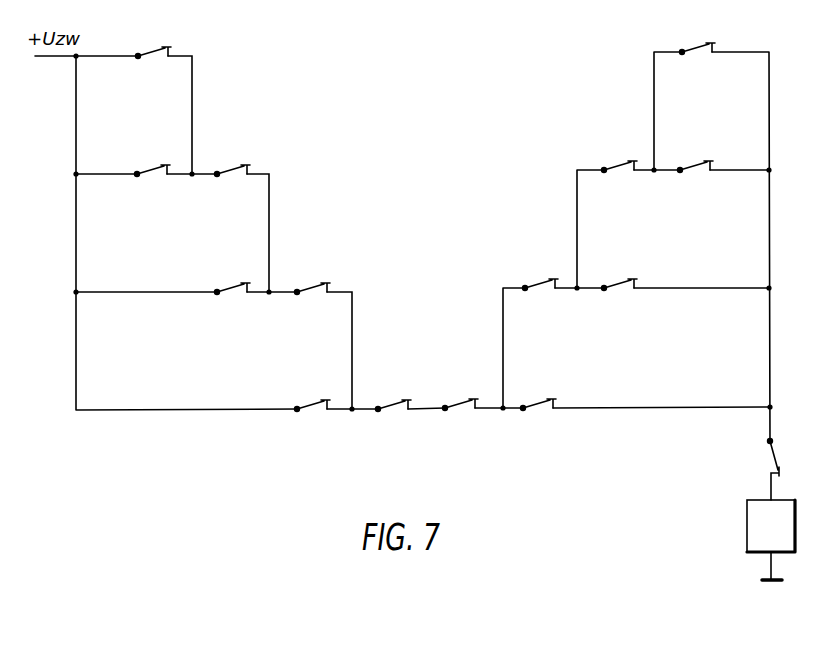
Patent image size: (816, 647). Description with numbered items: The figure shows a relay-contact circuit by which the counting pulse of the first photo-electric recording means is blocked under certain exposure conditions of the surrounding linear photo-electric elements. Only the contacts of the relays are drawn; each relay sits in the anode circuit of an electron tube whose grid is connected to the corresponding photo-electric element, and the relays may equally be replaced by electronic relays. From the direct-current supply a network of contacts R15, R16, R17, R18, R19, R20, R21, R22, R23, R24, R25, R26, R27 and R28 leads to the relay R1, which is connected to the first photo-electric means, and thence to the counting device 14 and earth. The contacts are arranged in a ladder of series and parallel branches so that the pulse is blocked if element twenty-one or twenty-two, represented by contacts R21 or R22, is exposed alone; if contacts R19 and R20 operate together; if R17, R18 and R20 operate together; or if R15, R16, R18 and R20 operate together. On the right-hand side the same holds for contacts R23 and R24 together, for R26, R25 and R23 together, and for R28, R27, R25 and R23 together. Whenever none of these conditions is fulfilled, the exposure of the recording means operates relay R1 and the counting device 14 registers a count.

The relay contact R15 is at (153, 44).
The relay contact R16 is at (148, 159).
The relay contact R17 is at (229, 159).
The relay contact R18 is at (228, 276).
The relay contact R19 is at (308, 276).
The relay contact R20 is at (310, 394).
The relay contact R21 is at (389, 394).
The relay contact R22 is at (457, 393).
The relay contact R23 is at (535, 393).
The relay contact R24 is at (534, 273).
The relay contact R25 is at (616, 273).
The relay contact R26 is at (616, 155).
The relay contact R27 is at (691, 155).
The relay contact R28 is at (695, 39).
The relay R1 is at (761, 469).
The counting device 14 is at (760, 518).